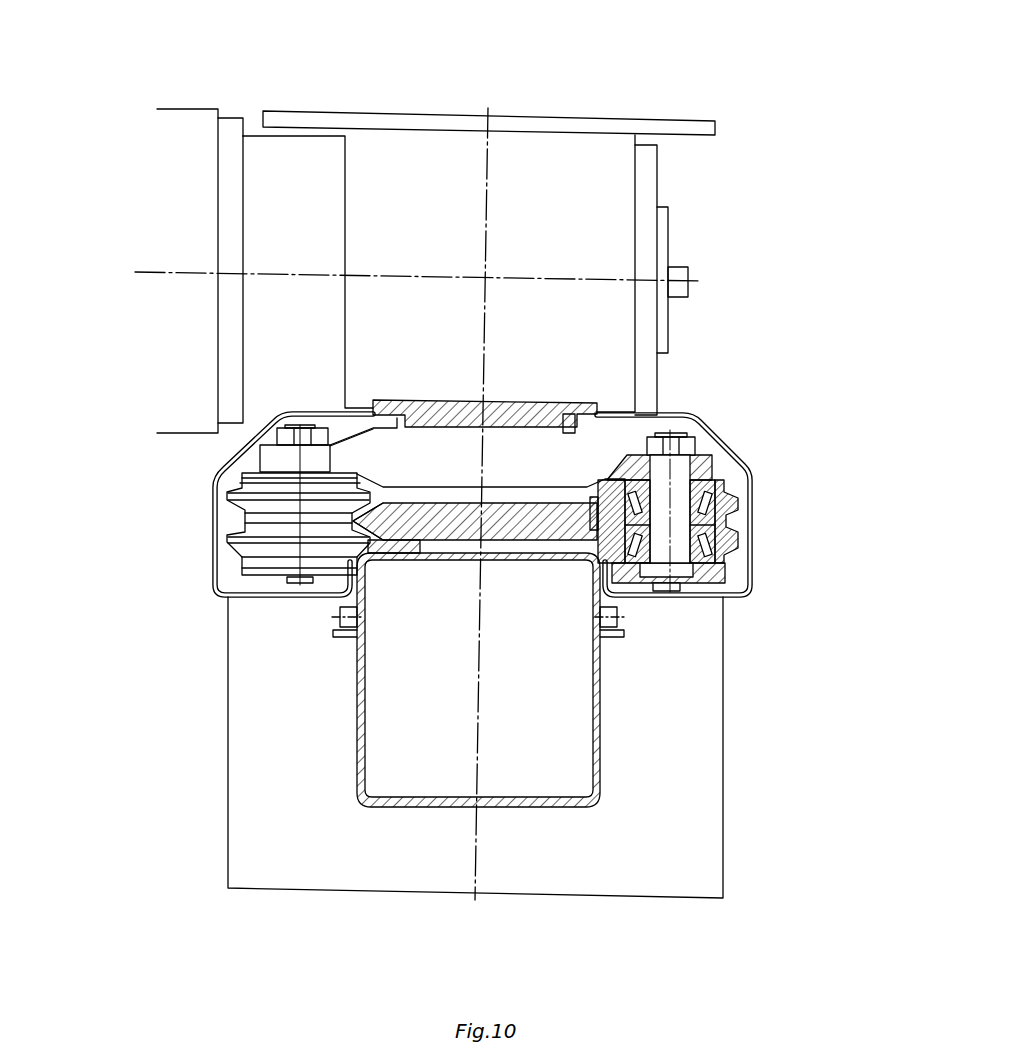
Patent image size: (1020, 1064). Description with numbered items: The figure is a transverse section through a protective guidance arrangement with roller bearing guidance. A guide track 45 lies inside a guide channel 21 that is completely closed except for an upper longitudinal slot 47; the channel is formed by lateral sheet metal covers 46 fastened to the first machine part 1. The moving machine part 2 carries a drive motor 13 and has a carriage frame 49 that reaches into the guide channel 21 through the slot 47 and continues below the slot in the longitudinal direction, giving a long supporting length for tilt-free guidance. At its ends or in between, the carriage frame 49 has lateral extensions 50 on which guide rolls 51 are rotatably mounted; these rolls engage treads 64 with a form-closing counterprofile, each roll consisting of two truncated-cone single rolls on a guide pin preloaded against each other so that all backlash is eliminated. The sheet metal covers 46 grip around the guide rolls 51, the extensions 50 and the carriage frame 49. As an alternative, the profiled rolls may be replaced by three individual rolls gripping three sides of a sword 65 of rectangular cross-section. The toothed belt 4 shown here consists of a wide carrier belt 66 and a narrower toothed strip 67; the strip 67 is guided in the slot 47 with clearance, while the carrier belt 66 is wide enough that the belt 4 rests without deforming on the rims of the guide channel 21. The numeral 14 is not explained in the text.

The first machine part 1 is at (507, 810).
The moving machine part 2 is at (688, 127).
The toothed belt 4 is at (548, 398).
The drive motor 13 is at (188, 125).
The fastening bracket 14 is at (358, 420).
The guide channel 21 is at (328, 580).
The guide track 45 is at (598, 490).
The sheet metal covers 46 is at (745, 471).
The longitudinal slot 47 is at (571, 434).
The carriage frame 49 is at (503, 450).
The lateral extensions 50 is at (265, 457).
The guide rolls 51 is at (733, 507).
The treads 64 is at (418, 543).
The sword 65 is at (500, 530).
The carrier belt 66 is at (395, 407).
The toothed strip 67 is at (441, 411).